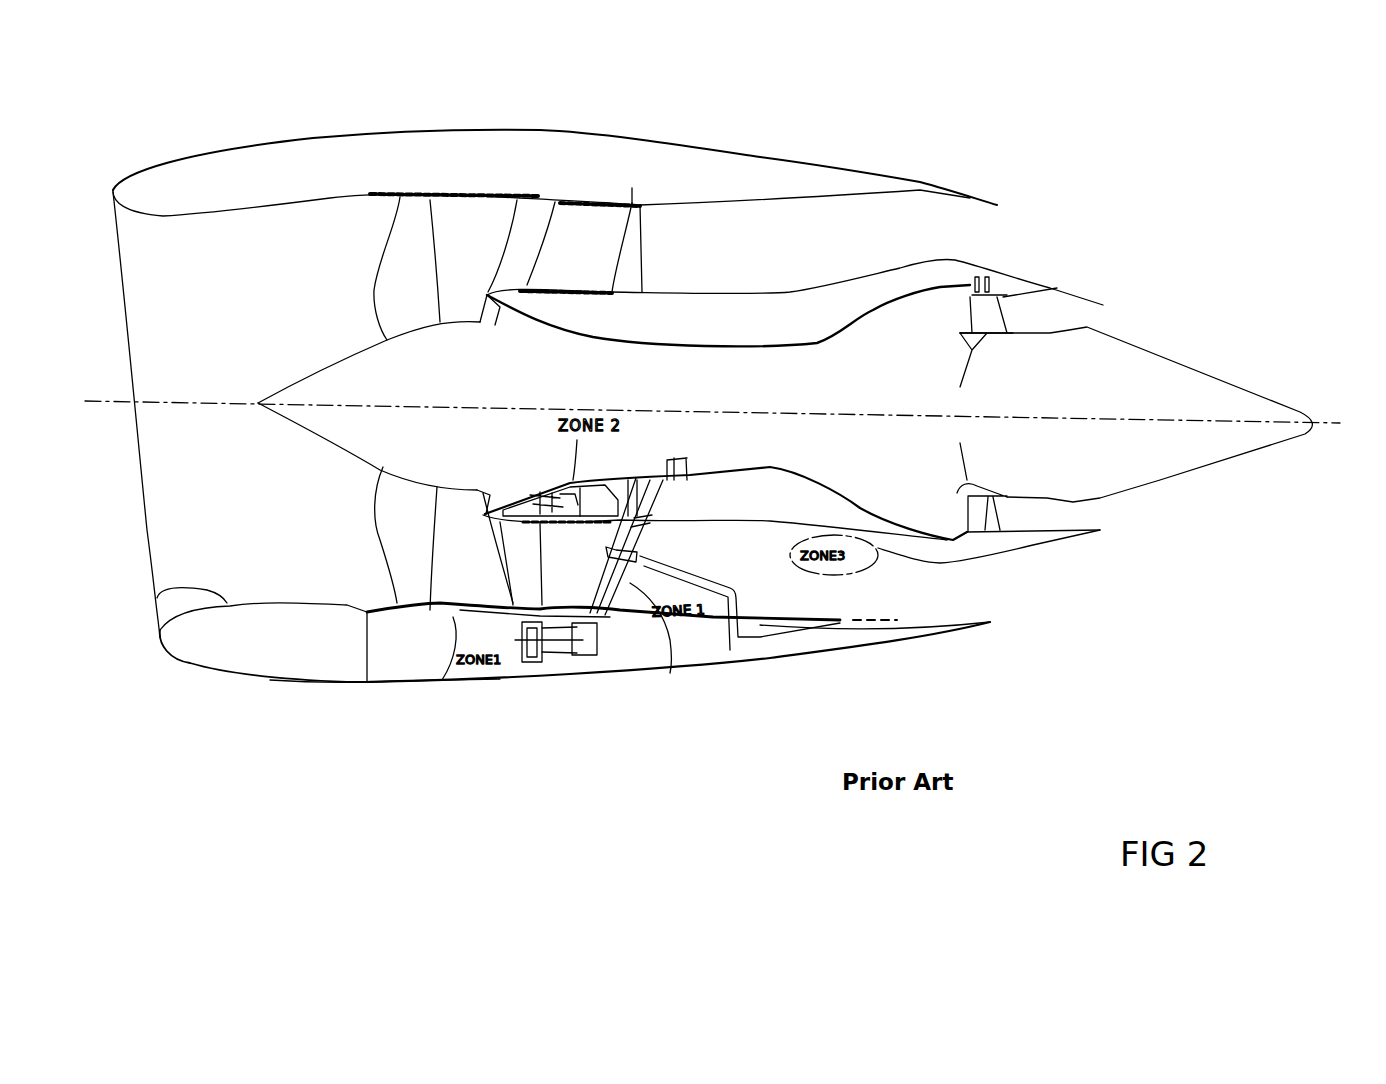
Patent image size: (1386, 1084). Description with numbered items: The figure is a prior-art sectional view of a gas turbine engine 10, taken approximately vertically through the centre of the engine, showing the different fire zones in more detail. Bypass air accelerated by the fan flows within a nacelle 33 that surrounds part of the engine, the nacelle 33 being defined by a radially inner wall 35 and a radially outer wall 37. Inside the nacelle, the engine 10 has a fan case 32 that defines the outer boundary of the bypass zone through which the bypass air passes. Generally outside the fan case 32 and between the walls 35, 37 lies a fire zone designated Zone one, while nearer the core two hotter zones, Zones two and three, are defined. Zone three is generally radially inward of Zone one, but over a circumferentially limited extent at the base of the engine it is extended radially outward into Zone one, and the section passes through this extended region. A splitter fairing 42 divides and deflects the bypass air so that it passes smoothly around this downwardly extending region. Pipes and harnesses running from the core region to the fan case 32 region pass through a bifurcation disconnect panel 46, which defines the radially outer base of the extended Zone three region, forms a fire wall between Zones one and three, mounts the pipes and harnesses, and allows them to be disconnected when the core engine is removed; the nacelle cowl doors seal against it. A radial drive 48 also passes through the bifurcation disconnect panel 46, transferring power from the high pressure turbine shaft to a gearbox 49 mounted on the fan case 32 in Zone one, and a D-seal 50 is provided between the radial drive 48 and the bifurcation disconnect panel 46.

The gas turbine engine 10 is at (1003, 670).
The fan case 32 is at (442, 680).
The nacelle 33 is at (270, 680).
The radially inner wall 35 is at (160, 595).
The radially outer wall 37 is at (350, 683).
The splitter fairing 42 is at (612, 615).
The bifurcation disconnect panel 46 is at (708, 580).
The radial drive 48 is at (672, 673).
The gearbox 49 is at (572, 660).
The D-seal 50 is at (640, 551).